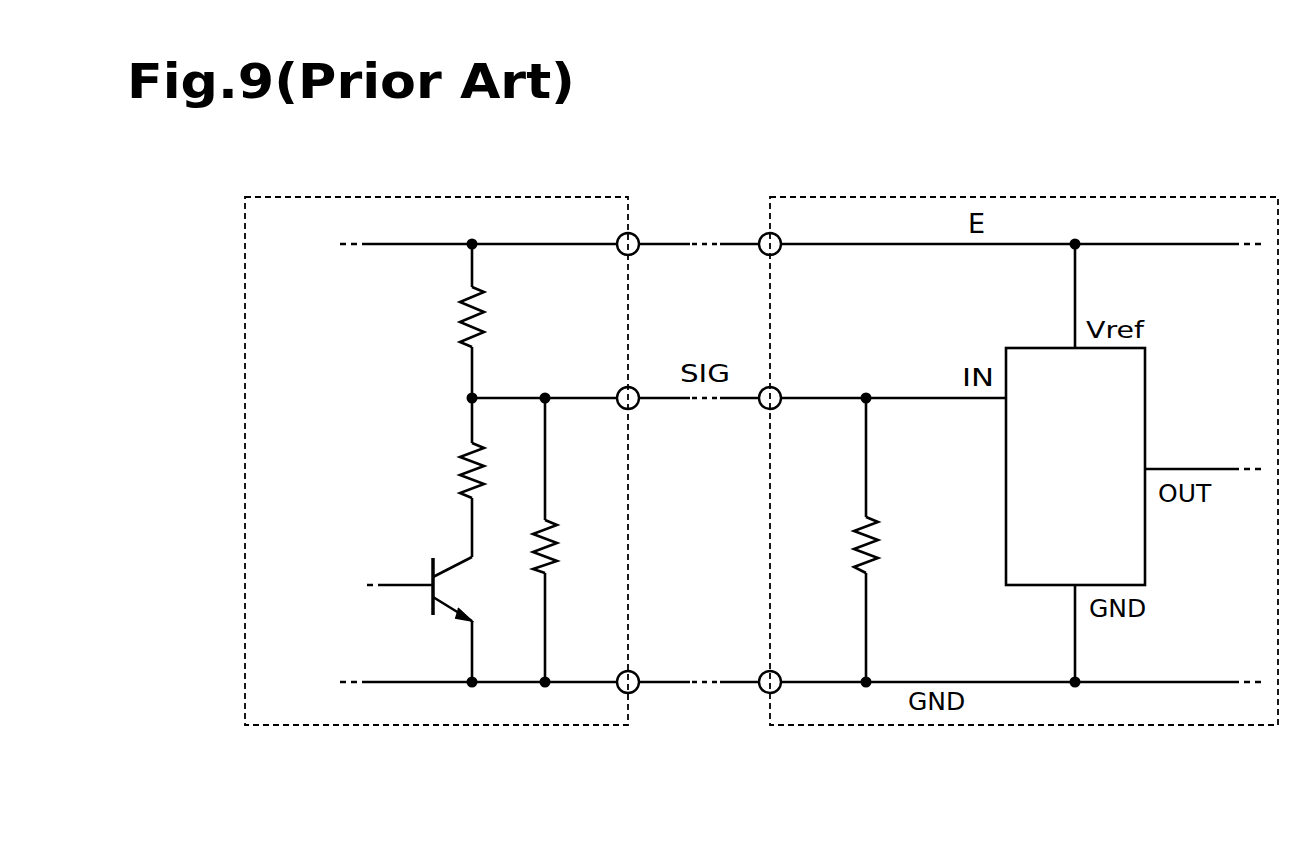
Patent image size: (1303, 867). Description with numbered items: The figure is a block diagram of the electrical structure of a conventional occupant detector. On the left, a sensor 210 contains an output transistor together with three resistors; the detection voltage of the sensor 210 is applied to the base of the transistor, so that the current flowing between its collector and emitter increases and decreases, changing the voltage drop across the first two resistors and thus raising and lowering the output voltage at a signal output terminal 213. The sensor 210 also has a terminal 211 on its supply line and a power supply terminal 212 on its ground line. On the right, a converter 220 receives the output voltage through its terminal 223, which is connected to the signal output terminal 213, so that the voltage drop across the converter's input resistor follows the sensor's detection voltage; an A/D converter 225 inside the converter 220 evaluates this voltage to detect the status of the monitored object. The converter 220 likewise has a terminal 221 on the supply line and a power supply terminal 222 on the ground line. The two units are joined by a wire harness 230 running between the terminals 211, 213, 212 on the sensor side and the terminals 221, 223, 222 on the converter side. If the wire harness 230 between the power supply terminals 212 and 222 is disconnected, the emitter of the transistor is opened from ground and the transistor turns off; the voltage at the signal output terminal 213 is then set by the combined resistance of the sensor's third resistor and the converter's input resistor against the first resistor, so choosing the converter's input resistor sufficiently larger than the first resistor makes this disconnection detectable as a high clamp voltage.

The sensor 210 is at (478, 510).
The power supply terminal of sensor unit 211 is at (637, 252).
The power supply terminal 212 is at (637, 674).
The signal output terminal 213 is at (637, 406).
The converter 220 is at (994, 508).
The power supply terminal of control unit 221 is at (779, 252).
The power supply terminal 222 is at (761, 674).
The signal input terminal of control unit 223 is at (779, 406).
The A/D converter 225 is at (1147, 389).
The wire harness 230 is at (763, 704).